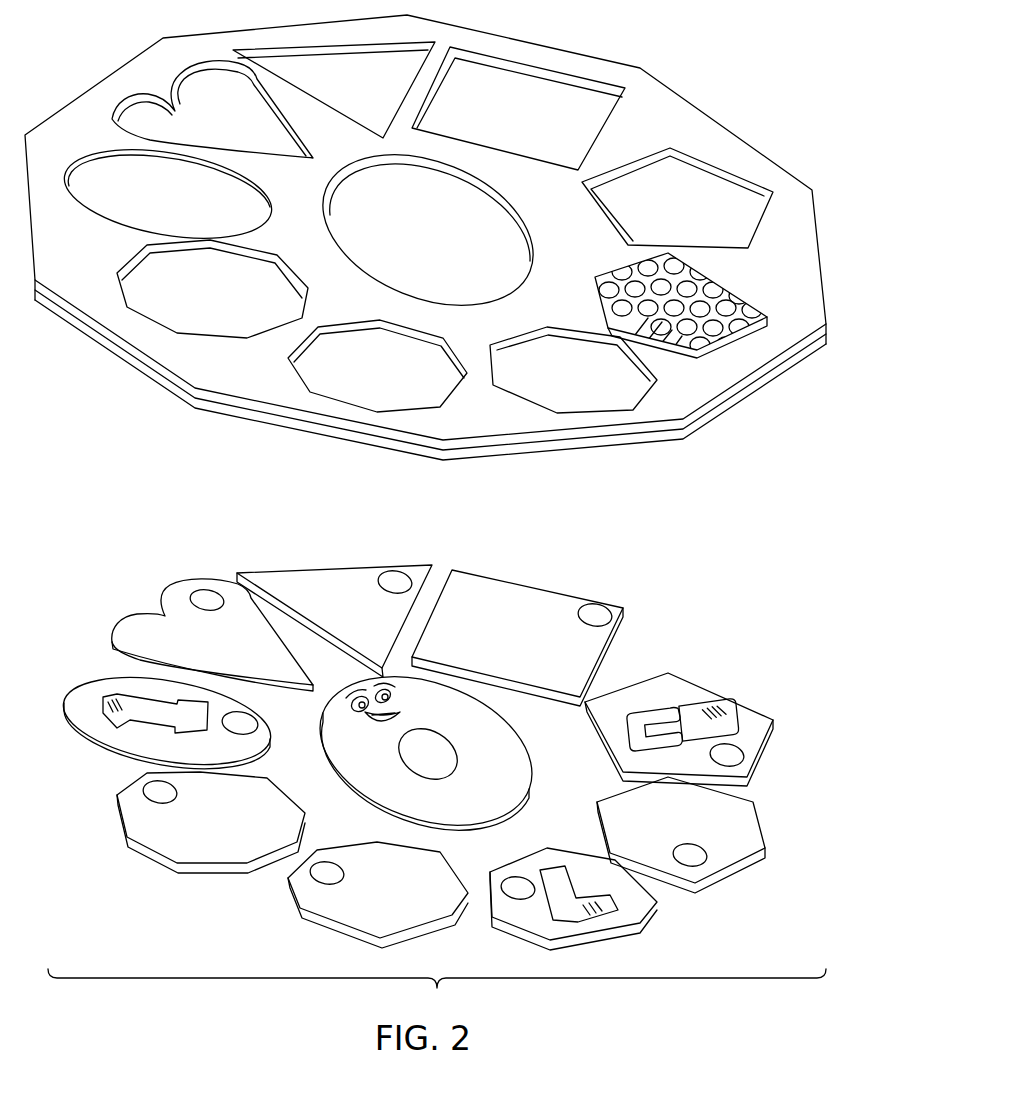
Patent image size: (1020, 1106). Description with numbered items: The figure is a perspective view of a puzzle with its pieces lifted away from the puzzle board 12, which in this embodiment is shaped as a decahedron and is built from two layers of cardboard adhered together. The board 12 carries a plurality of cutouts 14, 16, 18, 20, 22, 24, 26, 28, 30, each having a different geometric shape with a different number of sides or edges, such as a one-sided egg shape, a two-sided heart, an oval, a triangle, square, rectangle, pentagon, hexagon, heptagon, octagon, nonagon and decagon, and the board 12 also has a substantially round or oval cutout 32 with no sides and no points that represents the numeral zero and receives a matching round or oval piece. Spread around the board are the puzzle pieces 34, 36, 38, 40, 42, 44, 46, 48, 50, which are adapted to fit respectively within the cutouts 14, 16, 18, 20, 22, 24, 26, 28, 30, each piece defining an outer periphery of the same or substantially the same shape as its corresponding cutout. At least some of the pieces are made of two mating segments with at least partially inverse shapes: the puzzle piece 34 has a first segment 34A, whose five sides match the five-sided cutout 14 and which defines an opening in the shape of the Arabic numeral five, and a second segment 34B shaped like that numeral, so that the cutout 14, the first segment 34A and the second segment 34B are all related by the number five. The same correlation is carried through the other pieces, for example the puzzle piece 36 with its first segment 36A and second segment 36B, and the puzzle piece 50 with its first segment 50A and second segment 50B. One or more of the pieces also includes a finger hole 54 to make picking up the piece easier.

The puzzle board 12 is at (677, 97).
The cutout 14 is at (675, 215).
The cutout 16 is at (764, 300).
The cutout 18 is at (558, 382).
The cutout 20 is at (367, 375).
The cutout 22 is at (201, 300).
The cutout 24 is at (144, 202).
The cutout 26 is at (209, 122).
The cutout 28 is at (346, 95).
The cutout 30 is at (506, 118).
The round or oval cutout 32 is at (419, 238).
The puzzle piece 34 is at (695, 709).
The first segment 34A is at (752, 715).
The second segment 34B is at (737, 730).
The puzzle piece 36 is at (707, 840).
The first segment 36A is at (752, 813).
The second segment 36B is at (722, 840).
The puzzle piece 38 is at (633, 920).
The puzzle piece 40 is at (420, 930).
The puzzle piece 42 is at (224, 853).
The puzzle piece 44 is at (98, 730).
The puzzle piece 46 is at (130, 637).
The puzzle piece 48 is at (268, 580).
The puzzle piece 50 is at (517, 619).
The first segment 50A is at (558, 607).
The second segment 50B is at (538, 643).
The finger hole 54 is at (598, 612).